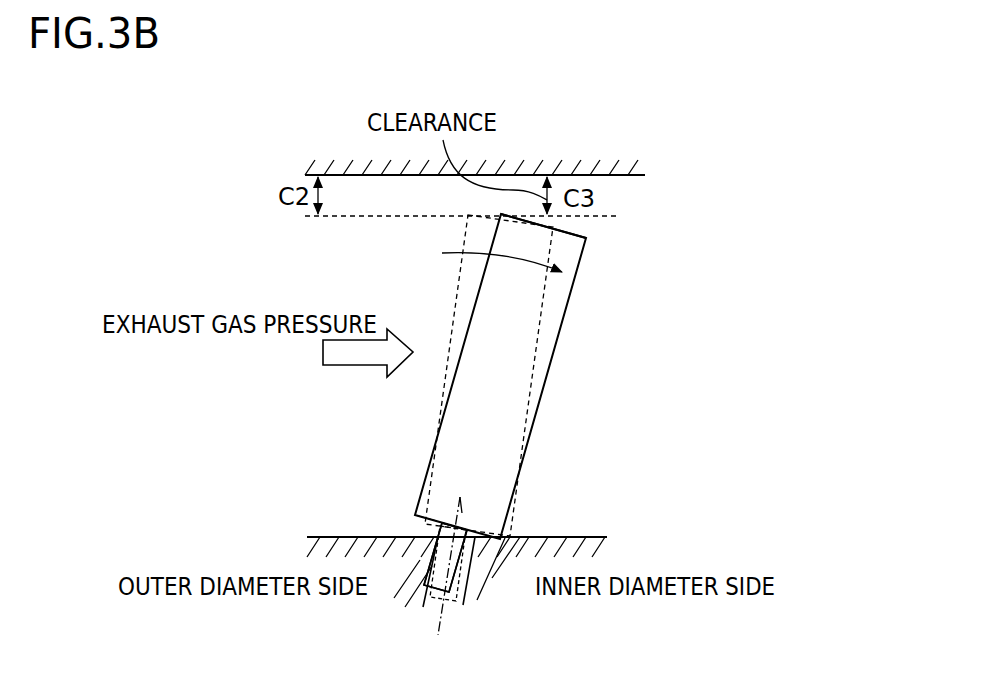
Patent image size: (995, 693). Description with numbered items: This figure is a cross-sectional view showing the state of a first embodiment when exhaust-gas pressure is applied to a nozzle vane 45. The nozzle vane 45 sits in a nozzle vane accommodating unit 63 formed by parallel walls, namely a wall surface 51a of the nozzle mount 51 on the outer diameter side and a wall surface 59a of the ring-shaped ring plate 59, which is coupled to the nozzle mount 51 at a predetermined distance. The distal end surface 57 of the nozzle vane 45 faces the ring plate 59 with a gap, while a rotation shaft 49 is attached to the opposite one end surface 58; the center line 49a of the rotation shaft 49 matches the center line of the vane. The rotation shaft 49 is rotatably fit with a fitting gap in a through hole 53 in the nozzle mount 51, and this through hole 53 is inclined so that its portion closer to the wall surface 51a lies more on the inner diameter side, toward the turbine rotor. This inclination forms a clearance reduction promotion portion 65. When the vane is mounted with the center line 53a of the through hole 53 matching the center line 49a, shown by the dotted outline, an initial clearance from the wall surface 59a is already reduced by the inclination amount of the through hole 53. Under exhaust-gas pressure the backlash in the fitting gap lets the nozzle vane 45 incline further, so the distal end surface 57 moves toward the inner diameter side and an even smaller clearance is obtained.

The nozzle vane 45 is at (557, 343).
The rotation shaft 49 is at (460, 525).
The center line of the rotation shaft 49a is at (463, 512).
The nozzle mount 51 is at (400, 592).
The wall surface of the nozzle mount 51a is at (325, 537).
The through hole 53 is at (460, 605).
The center line of the through hole 53a is at (444, 622).
The distal end surface 57 is at (566, 226).
The one end surface 58 is at (427, 527).
The ring plate 59 is at (441, 138).
The wall surface of the ring plate 59a is at (618, 177).
The nozzle vane accommodating unit 63 is at (291, 153).
The clearance reduction promotion portion 65 is at (500, 580).